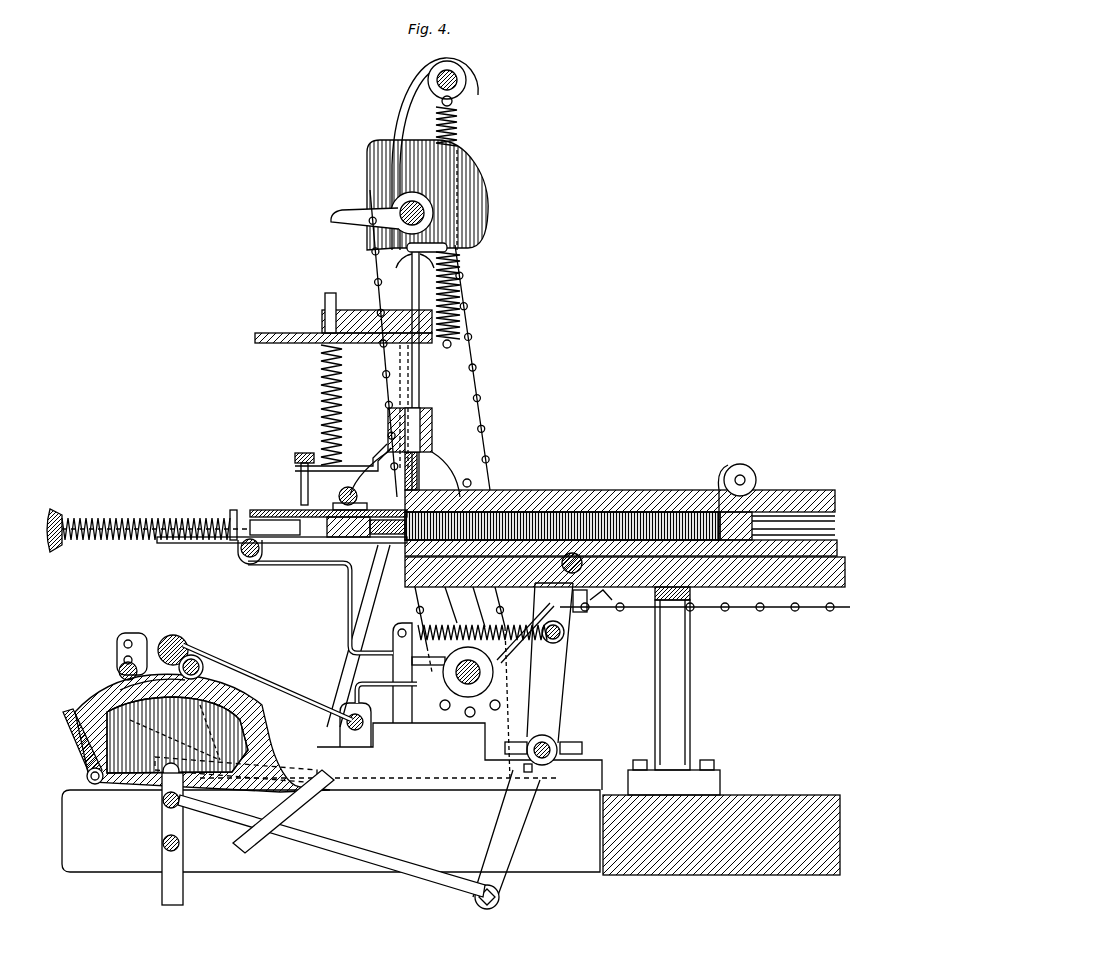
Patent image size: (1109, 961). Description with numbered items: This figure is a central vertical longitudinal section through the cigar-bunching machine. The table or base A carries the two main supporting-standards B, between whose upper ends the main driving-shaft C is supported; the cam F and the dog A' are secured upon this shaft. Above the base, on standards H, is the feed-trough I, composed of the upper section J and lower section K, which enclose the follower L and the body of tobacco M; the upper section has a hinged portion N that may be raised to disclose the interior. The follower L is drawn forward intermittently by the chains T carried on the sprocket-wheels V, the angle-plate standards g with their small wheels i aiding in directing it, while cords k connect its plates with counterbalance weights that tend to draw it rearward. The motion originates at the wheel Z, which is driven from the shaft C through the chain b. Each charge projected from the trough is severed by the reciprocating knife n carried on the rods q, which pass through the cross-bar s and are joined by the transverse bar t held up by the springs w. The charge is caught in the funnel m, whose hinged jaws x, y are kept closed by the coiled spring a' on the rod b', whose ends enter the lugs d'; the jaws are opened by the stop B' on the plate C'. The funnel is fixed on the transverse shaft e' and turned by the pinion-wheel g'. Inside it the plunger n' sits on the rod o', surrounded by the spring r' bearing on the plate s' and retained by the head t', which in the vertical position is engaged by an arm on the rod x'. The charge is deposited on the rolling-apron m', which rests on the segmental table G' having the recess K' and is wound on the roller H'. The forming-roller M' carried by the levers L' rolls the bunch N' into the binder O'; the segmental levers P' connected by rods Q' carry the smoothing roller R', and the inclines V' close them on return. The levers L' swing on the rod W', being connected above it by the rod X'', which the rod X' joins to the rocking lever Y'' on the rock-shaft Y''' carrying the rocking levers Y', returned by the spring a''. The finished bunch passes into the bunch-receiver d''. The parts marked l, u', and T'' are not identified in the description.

The main supporting-standards B is at (402, 392).
The springs w is at (463, 126).
The main driving-shaft C is at (409, 213).
The dog A' is at (364, 228).
The rods q is at (419, 366).
The rod x' is at (439, 310).
The transverse bar t is at (450, 353).
The chain b is at (482, 512).
The cross-bar s is at (377, 313).
The plate u' is at (343, 331).
The pinion-wheel g' is at (340, 405).
The cam F is at (416, 407).
The reciprocating knife n is at (405, 474).
The plate C' is at (343, 457).
The stop B' is at (298, 479).
The rod b' is at (343, 496).
The hinged portion N is at (620, 492).
The tobacco M is at (562, 506).
The feed-trough I is at (562, 506).
The follower L is at (746, 506).
The upper section J is at (793, 503).
The lower section K is at (621, 556).
The beam l is at (625, 572).
The angle-plate standards g is at (718, 485).
The small wheels i is at (746, 464).
The sprocket-wheels V is at (598, 600).
The chains T is at (705, 616).
The standards H is at (674, 691).
The table A is at (451, 832).
The concavity K' is at (401, 756).
The wheel Z is at (446, 655).
The spring a' is at (470, 699).
The spring a'' is at (486, 633).
The lugs d' is at (553, 643).
The rocking levers Y' is at (550, 663).
The rock-shaft Y''' is at (552, 748).
The rocking lever Y'' is at (506, 839).
The roller H' is at (378, 715).
The transverse shaft e' is at (318, 608).
The jaw y is at (328, 505).
The jaw x is at (282, 546).
The funnel m is at (272, 514).
The lug or plate s' is at (224, 520).
The cords k is at (338, 545).
The plunger n' is at (371, 537).
The coiled spring r' is at (146, 520).
The rod o' is at (156, 514).
The head t' is at (57, 523).
The segmental table G' is at (199, 733).
The bunch-receiver d'' is at (74, 746).
The forming-roller M' is at (179, 642).
The bunch N' is at (202, 667).
The segmental auxiliary levers P' is at (132, 643).
The rods Q' is at (114, 637).
The roller R' is at (115, 664).
The binder O' is at (137, 678).
The rolling-apron m' is at (267, 682).
The lever T'' is at (236, 770).
The levers L' is at (161, 839).
The rod X'' is at (190, 798).
The rod W' is at (185, 843).
The rod X' is at (331, 846).
The inclines V' is at (283, 811).